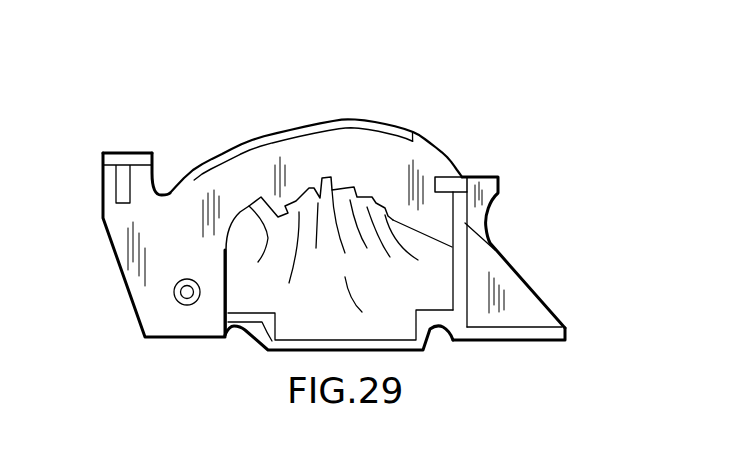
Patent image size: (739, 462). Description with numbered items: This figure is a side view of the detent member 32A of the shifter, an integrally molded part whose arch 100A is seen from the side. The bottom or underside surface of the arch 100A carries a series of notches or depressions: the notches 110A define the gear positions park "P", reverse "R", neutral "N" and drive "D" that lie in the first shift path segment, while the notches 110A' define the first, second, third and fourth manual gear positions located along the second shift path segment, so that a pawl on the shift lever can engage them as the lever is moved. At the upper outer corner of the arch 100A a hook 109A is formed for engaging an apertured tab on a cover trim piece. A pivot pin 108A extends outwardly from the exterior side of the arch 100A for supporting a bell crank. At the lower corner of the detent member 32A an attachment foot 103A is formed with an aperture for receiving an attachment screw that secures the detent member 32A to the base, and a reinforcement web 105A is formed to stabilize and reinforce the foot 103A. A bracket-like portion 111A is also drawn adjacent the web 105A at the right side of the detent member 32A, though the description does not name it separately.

The detent member 32A is at (211, 130).
The hook 109A is at (124, 160).
The arch 100A is at (297, 157).
The bracket 111A is at (348, 127).
The reinforcement web 105A is at (527, 280).
The attachment foot 103A is at (528, 337).
The pivot pin 108A is at (183, 303).
The notches 110A is at (299, 300).
The notches 110A' is at (435, 315).